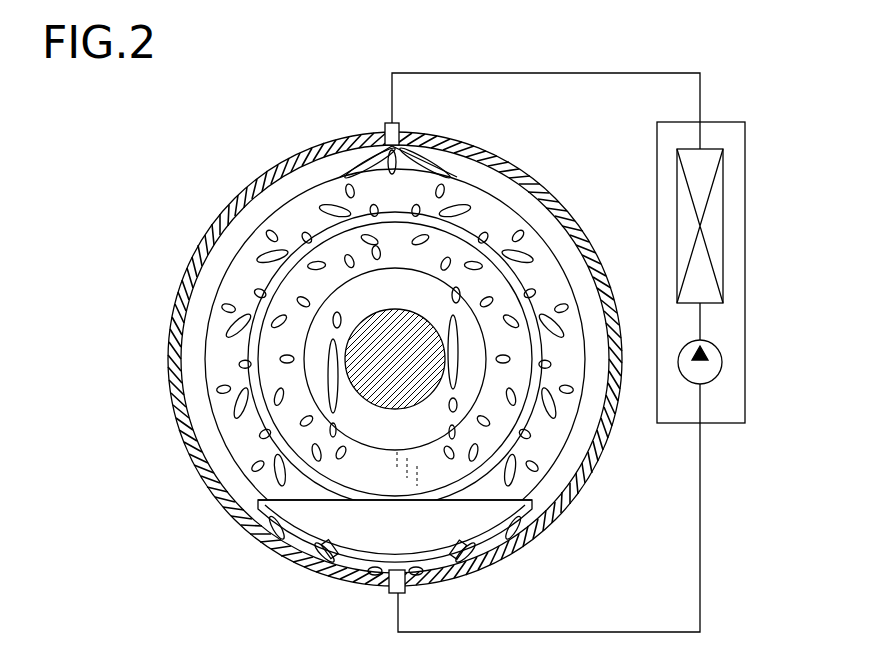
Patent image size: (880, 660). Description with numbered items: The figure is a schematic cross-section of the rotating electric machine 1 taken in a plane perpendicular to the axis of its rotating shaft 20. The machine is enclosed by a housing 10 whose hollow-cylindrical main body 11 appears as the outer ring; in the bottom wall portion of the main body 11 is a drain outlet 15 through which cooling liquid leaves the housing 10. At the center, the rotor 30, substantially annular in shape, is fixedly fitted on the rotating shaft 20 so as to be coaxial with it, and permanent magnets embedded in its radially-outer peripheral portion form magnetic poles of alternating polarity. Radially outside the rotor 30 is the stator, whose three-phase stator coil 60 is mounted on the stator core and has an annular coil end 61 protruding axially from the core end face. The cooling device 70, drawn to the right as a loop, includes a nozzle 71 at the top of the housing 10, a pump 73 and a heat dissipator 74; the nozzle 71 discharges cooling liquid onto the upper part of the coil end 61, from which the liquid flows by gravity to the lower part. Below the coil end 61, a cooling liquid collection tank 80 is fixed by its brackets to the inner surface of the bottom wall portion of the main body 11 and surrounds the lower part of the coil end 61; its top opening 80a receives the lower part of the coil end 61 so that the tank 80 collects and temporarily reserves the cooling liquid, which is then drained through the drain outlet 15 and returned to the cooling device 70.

The rotating electric machine 1 is at (240, 148).
The housing 10 is at (547, 188).
The main body 11 is at (558, 212).
The drain outlet 15 is at (386, 593).
The rotating shaft 20 is at (365, 380).
The rotor 30 is at (282, 360).
The stator coil 60 is at (239, 264).
The coil end 61 is at (240, 312).
The cooling device 70 is at (746, 323).
The nozzle 71 is at (385, 126).
The pump 73 is at (723, 362).
The heat dissipator 74 is at (724, 196).
The cooling liquid collection tank 80 is at (322, 522).
The top opening 80a is at (262, 490).